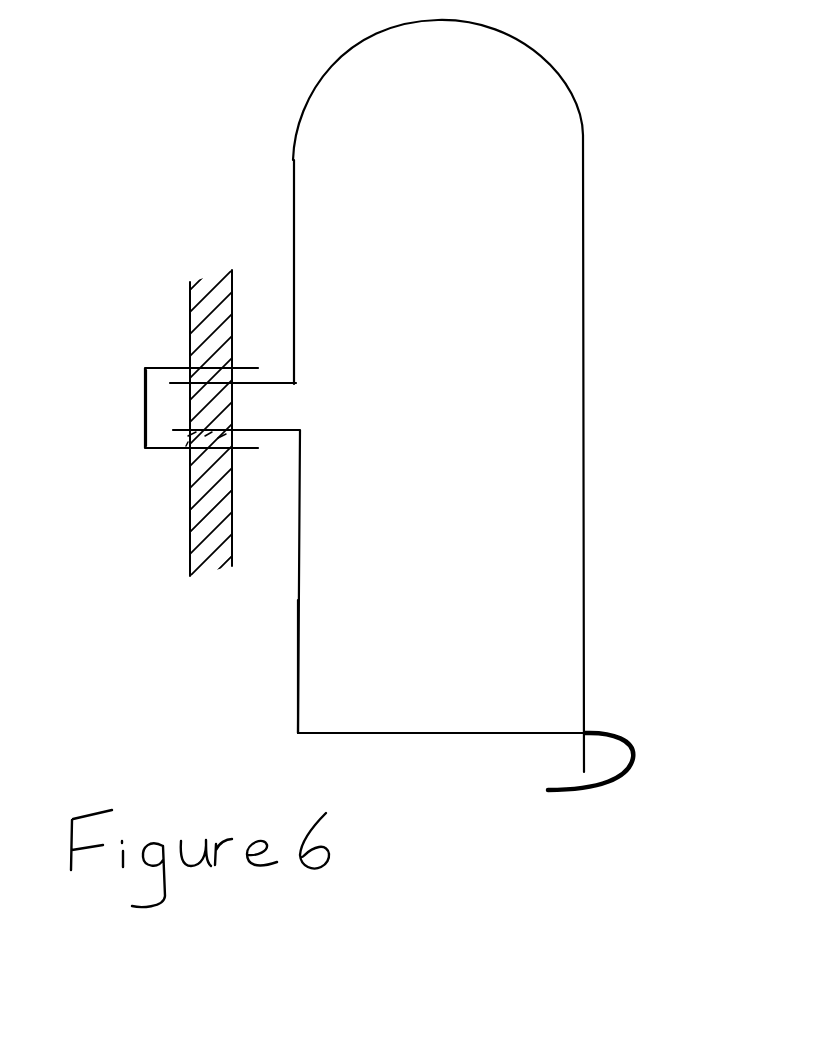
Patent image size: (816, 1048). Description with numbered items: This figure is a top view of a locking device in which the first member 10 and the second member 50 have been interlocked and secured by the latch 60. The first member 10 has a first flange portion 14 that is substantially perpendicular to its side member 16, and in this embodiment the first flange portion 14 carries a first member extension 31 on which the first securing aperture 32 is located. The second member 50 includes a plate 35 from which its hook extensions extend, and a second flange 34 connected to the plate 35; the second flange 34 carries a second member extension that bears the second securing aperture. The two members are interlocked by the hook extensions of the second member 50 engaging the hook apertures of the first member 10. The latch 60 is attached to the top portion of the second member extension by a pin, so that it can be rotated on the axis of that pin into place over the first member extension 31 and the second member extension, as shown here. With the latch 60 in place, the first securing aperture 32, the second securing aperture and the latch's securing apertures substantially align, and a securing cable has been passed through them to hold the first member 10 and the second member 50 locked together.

The first member 10 is at (485, 396).
The side member 16 is at (340, 272).
The first flange portion 14 is at (264, 351).
The second flange 34 is at (275, 566).
The first securing aperture 32 is at (257, 666).
The first member extension 31 is at (167, 368).
The latch 60 is at (84, 408).
The plate 35 is at (249, 615).
The second member 50 is at (465, 705).